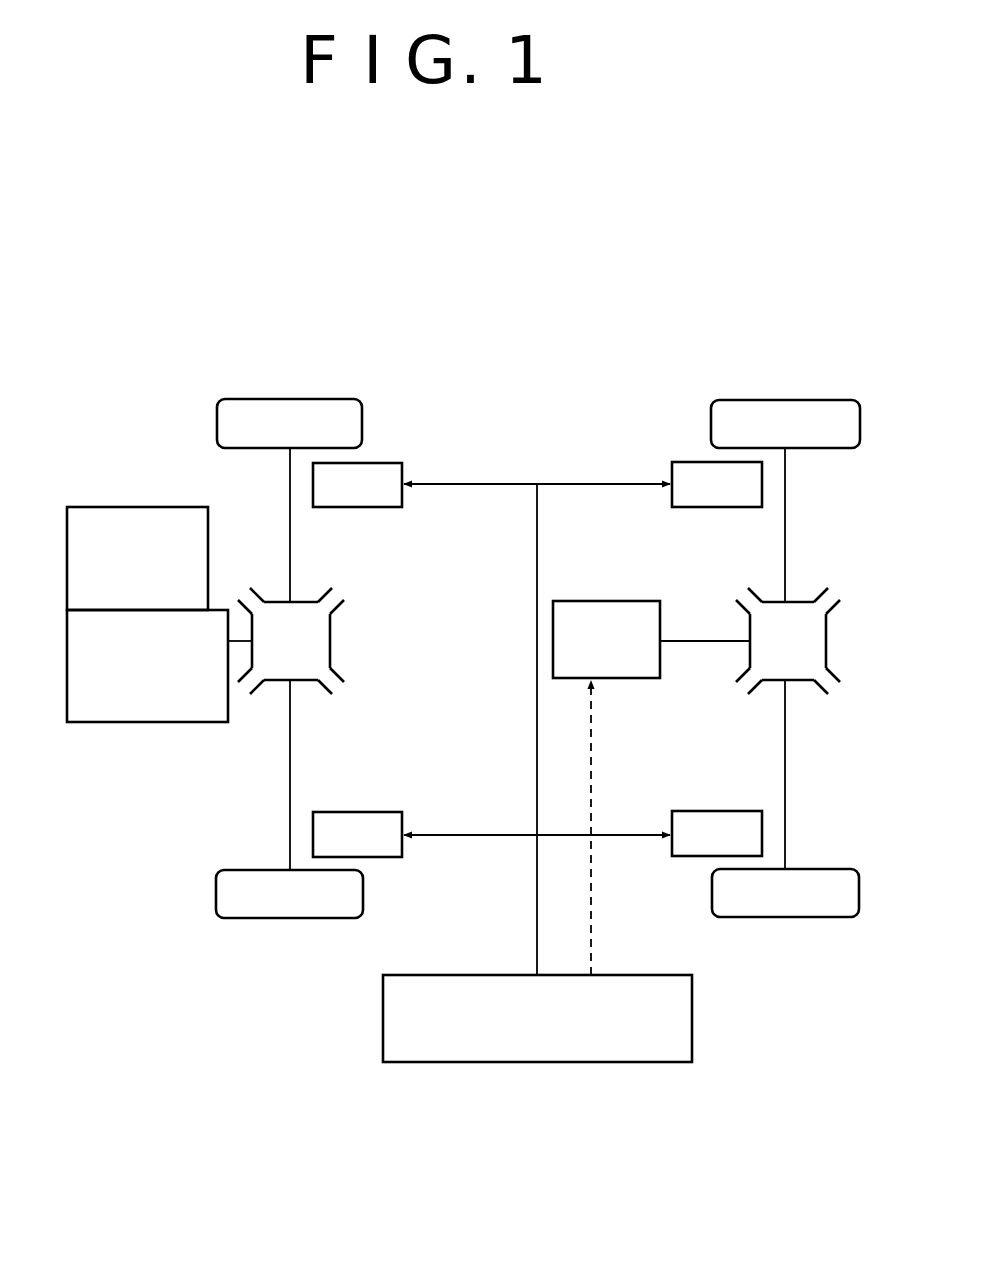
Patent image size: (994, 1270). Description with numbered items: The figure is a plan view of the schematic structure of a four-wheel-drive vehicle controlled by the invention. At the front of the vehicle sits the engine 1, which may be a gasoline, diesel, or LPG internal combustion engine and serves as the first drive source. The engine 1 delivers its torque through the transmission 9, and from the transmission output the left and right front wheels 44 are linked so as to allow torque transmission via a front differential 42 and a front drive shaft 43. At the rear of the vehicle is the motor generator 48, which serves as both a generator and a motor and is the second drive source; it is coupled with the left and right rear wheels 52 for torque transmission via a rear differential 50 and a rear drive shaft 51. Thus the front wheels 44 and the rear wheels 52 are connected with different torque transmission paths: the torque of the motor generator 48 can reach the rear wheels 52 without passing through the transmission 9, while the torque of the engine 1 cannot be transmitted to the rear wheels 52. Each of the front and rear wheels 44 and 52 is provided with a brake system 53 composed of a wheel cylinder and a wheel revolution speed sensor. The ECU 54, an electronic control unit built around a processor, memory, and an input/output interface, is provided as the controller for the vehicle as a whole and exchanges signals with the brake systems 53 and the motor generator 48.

The engine 1 is at (108, 515).
The transmission 9 is at (110, 715).
The front differential 42 is at (256, 735).
The front drive shaft 43 is at (290, 551).
The front wheels 44 is at (300, 408).
The motor generator 48 is at (620, 672).
The rear differential 50 is at (815, 718).
The rear drive shaft 51 is at (785, 511).
The rear wheels 52 is at (767, 408).
The brake system 53 is at (378, 466).
The ECU 54 is at (588, 1055).